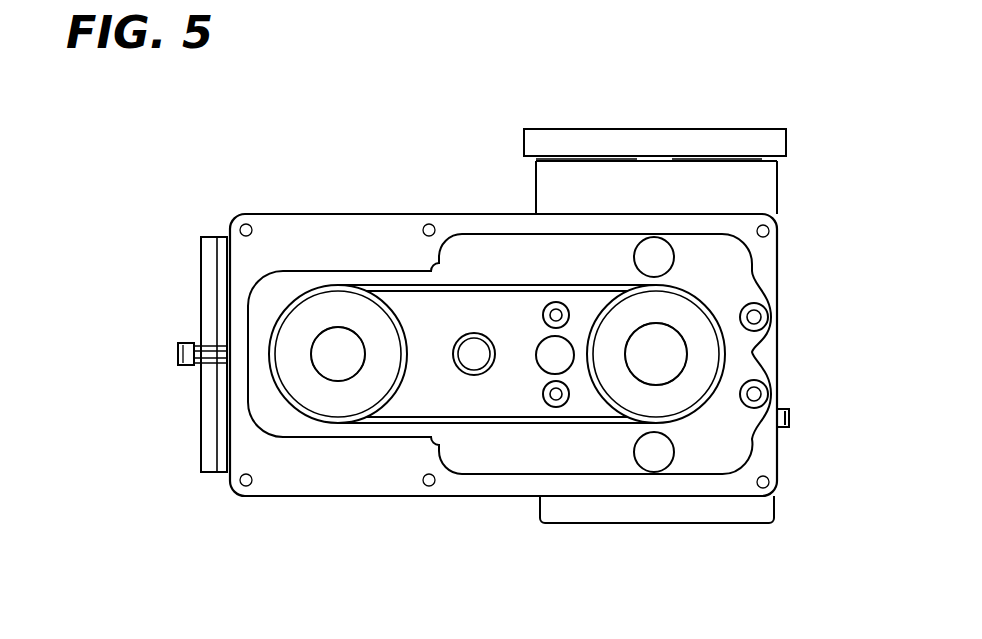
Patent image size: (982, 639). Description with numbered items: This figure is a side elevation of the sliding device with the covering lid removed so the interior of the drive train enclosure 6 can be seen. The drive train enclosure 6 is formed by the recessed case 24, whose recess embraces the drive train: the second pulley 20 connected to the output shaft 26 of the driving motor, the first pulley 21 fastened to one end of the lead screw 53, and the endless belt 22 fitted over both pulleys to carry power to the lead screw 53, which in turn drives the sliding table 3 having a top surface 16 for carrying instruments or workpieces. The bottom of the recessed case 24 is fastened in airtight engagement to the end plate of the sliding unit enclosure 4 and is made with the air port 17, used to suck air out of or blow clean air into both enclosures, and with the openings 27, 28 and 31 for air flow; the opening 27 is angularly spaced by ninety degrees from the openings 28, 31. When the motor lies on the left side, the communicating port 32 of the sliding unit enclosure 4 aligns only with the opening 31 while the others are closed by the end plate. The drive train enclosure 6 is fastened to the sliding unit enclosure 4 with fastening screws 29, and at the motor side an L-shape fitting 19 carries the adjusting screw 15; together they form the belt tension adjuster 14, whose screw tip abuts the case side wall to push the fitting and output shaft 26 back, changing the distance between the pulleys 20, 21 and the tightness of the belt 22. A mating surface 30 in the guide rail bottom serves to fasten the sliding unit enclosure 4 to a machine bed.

The sliding table 3 is at (714, 149).
The sliding unit enclosure 4 is at (758, 188).
The drive train enclosure 6 is at (410, 232).
The belt tension adjuster 14 is at (185, 322).
The adjusting screw 15 is at (182, 367).
The top surface 16 is at (763, 130).
The air port 17 is at (472, 367).
The L-shape fitting 19 is at (210, 280).
The second pulley 20 is at (329, 310).
The first pulley 21 is at (690, 320).
The endless belt 22 is at (513, 420).
The recessed case 24 is at (363, 472).
The output shaft 26 is at (345, 343).
The opening 27 is at (540, 352).
The opening 28 is at (642, 250).
The fastening screws 29 is at (757, 394).
The mating surface 30 is at (728, 524).
The opening 31 is at (676, 455).
The communicating port 32 is at (657, 460).
The lead screw 53 is at (693, 357).